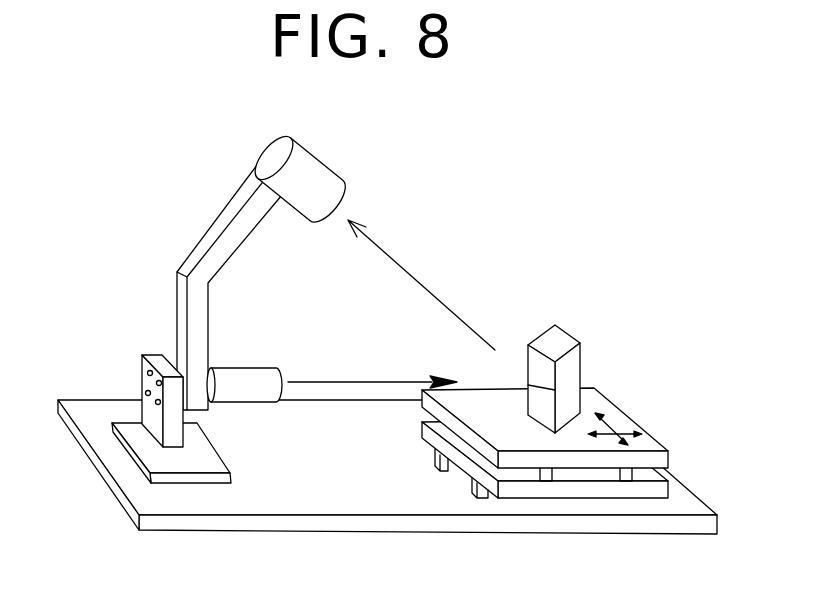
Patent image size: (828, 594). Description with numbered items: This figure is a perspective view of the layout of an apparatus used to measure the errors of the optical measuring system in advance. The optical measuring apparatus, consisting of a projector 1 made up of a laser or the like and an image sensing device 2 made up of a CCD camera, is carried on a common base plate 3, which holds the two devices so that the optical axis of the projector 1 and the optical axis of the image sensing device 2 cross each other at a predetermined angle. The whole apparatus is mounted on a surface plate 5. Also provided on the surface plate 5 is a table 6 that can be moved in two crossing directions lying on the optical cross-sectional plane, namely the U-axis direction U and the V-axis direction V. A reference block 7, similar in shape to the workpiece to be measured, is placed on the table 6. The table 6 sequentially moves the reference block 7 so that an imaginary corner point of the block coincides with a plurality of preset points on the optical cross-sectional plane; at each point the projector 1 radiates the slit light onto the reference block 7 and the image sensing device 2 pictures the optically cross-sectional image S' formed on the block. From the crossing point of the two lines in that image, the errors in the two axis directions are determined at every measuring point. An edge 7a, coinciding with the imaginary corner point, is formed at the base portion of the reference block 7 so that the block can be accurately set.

The projector 1 is at (253, 393).
The image sensing device 2 is at (320, 177).
The base plate 3 is at (177, 317).
The surface plate 5 is at (283, 522).
The table 6 is at (635, 417).
The reference block 7 is at (496, 417).
The edge 7a is at (524, 408).
The optically cross-sectional image S' is at (497, 403).
The U-axis direction U is at (605, 433).
The V-axis direction V is at (612, 428).